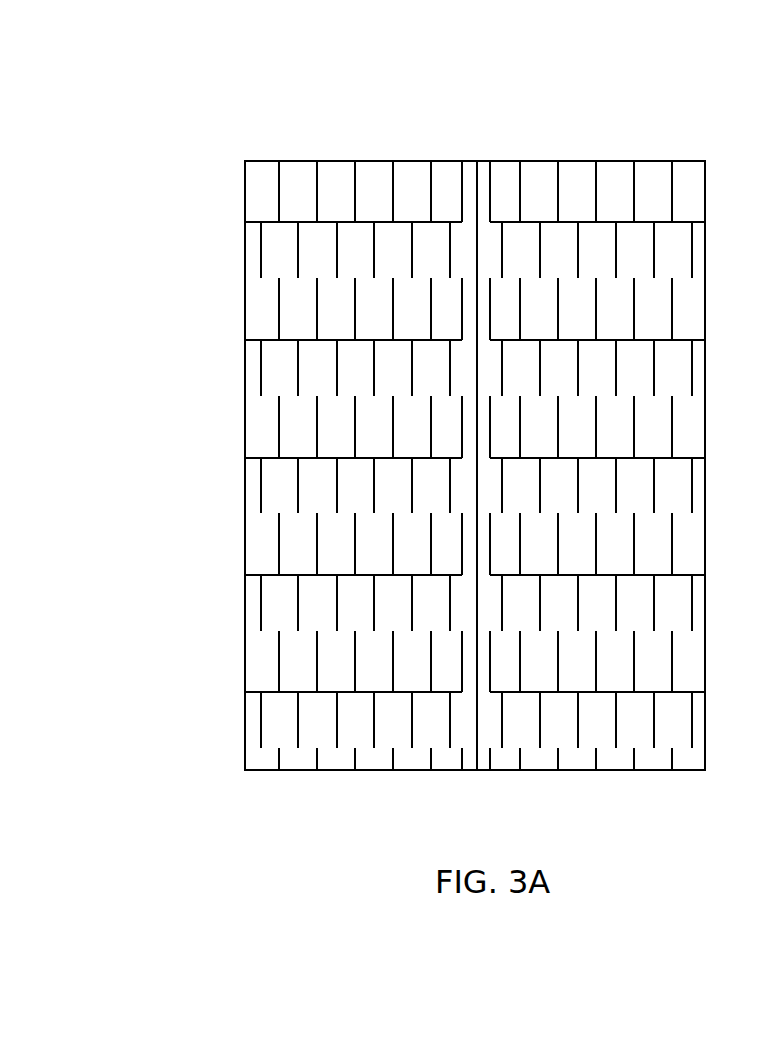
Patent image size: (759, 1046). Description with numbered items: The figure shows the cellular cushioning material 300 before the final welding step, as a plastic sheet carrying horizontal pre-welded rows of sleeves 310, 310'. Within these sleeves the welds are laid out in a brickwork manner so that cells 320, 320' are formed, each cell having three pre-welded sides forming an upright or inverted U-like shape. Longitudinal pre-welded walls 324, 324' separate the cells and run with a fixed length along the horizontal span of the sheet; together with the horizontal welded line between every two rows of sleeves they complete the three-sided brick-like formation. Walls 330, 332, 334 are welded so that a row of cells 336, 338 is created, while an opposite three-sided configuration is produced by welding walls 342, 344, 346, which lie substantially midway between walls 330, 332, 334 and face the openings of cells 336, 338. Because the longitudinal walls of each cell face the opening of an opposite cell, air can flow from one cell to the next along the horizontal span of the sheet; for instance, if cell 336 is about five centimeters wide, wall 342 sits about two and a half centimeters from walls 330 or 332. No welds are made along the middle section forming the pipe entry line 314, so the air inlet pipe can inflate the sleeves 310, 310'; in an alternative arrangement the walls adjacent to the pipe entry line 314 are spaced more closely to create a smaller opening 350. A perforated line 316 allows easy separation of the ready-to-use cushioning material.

The cellular cushioning material 300 is at (221, 112).
The sleeve 310 is at (295, 191).
The cell 320 is at (223, 200).
The sleeve 310' is at (199, 250).
The cell 320' is at (217, 264).
The longitudinal pre-welded wall 324' is at (313, 141).
The longitudinal pre-welded wall 324 is at (353, 154).
The wall 332 is at (337, 250).
The wall 334 is at (375, 250).
The opening 350 is at (457, 278).
The wall 330 is at (300, 268).
The cell 336 is at (317, 263).
The cell 338 is at (352, 264).
The wall 342 is at (352, 268).
The wall 344 is at (355, 322).
The wall 346 is at (393, 320).
The pipe entry line 314 is at (472, 771).
The perforated line 316 is at (479, 771).